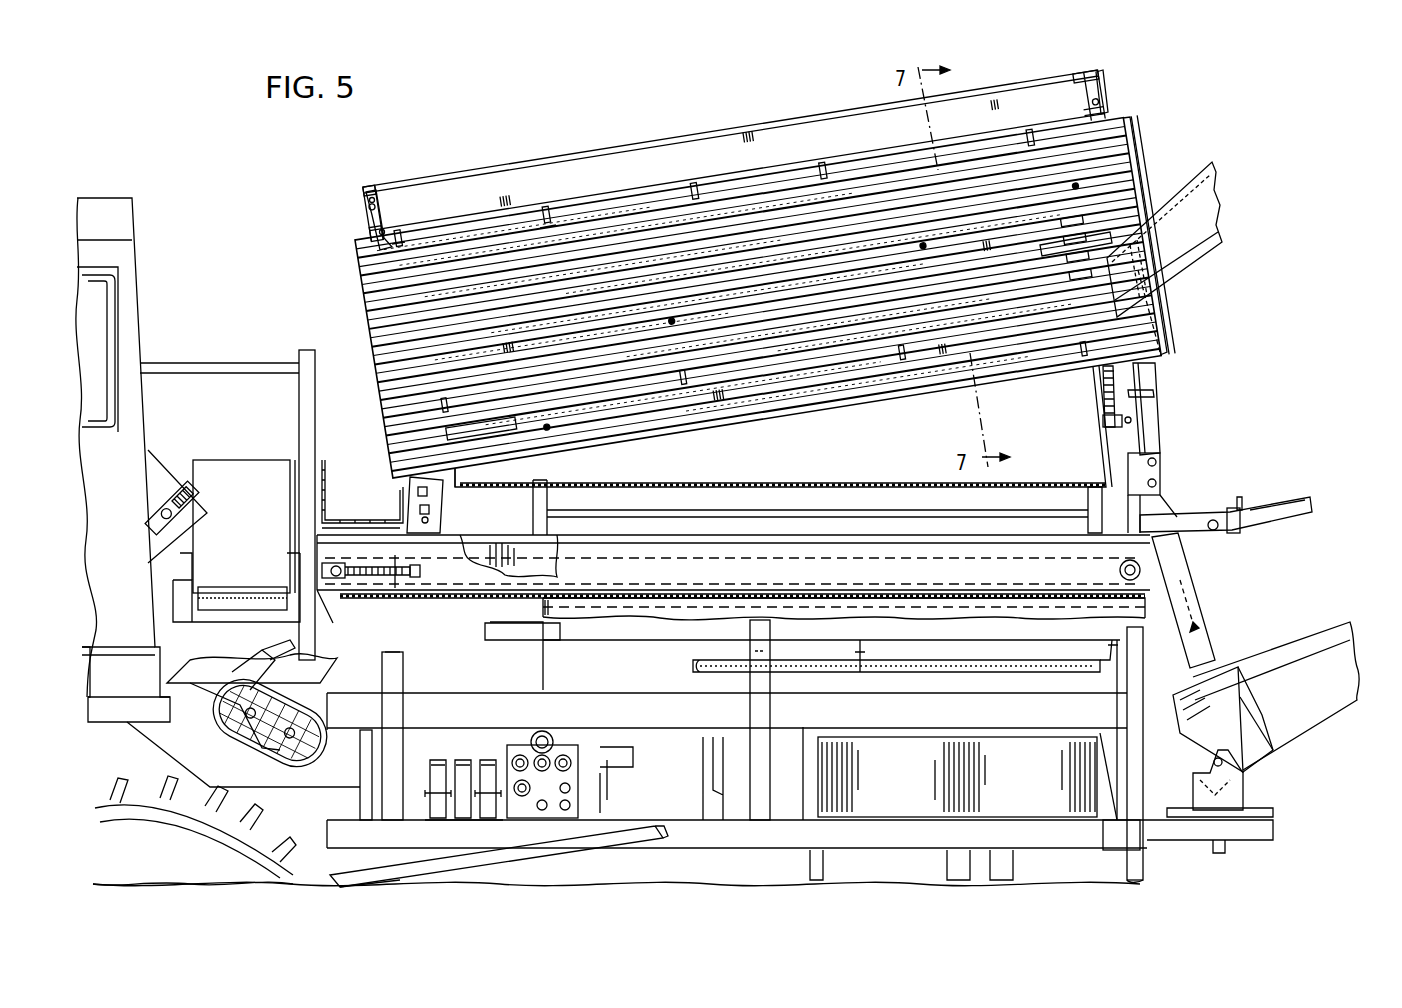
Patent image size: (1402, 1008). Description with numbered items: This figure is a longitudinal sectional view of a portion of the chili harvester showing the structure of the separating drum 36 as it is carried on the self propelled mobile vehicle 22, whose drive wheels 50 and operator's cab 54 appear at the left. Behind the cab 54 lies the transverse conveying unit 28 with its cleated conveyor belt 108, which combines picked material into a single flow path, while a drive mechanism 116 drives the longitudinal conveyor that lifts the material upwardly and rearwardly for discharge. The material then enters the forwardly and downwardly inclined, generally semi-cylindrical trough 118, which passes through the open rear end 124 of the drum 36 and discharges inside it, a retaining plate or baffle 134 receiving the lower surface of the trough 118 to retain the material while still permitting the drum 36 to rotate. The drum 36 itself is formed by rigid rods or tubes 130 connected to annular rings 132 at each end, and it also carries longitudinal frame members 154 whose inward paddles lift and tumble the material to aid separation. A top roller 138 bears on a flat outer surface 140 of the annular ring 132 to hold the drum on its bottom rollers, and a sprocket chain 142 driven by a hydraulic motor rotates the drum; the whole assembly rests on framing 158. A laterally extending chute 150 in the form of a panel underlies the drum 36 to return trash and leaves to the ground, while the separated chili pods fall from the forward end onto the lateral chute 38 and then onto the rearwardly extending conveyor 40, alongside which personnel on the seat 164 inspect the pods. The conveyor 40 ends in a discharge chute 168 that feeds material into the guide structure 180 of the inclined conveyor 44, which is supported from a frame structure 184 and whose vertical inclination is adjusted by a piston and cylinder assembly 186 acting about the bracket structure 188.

The self propelled mobile vehicle 22 is at (762, 848).
The transverse conveying unit 28 is at (244, 456).
The separating drum 36 is at (602, 197).
The chute 38 is at (350, 514).
The rearwardly extending conveyor 40 is at (514, 534).
The inclined conveyor 44 is at (1289, 658).
The drive wheels 50 is at (298, 863).
The operator's cab 54 is at (146, 256).
The cleated conveyor belt 108 is at (236, 588).
The drive mechanism 116 is at (268, 752).
The trough 118 is at (1196, 234).
The open rear end 124 is at (1137, 185).
The rods or tubes 130 is at (546, 228).
The annular rings 132 is at (388, 222).
The retaining plate or baffle 134 is at (1160, 300).
The top roller 138 is at (1105, 96).
The flat outer surface 140 is at (406, 224).
The sprocket chain 142 is at (1100, 398).
The laterally extending chute 150 is at (898, 462).
The longitudinal frame members 154 is at (1103, 240).
The framing 158 is at (734, 130).
The seat 164 is at (636, 600).
The discharge chute 168 is at (1188, 614).
The guide structure 180 is at (1238, 668).
The frame structure 184 is at (1262, 840).
The piston and cylinder assembly 186 is at (1277, 503).
The bracket structure 188 is at (1245, 795).